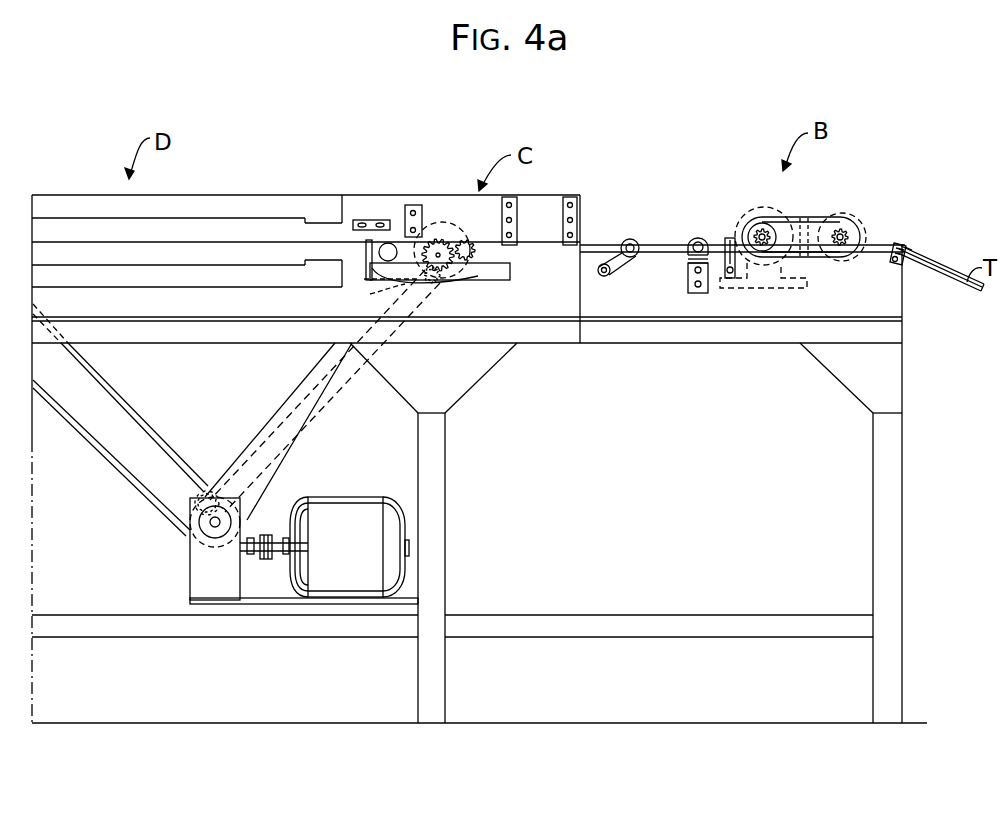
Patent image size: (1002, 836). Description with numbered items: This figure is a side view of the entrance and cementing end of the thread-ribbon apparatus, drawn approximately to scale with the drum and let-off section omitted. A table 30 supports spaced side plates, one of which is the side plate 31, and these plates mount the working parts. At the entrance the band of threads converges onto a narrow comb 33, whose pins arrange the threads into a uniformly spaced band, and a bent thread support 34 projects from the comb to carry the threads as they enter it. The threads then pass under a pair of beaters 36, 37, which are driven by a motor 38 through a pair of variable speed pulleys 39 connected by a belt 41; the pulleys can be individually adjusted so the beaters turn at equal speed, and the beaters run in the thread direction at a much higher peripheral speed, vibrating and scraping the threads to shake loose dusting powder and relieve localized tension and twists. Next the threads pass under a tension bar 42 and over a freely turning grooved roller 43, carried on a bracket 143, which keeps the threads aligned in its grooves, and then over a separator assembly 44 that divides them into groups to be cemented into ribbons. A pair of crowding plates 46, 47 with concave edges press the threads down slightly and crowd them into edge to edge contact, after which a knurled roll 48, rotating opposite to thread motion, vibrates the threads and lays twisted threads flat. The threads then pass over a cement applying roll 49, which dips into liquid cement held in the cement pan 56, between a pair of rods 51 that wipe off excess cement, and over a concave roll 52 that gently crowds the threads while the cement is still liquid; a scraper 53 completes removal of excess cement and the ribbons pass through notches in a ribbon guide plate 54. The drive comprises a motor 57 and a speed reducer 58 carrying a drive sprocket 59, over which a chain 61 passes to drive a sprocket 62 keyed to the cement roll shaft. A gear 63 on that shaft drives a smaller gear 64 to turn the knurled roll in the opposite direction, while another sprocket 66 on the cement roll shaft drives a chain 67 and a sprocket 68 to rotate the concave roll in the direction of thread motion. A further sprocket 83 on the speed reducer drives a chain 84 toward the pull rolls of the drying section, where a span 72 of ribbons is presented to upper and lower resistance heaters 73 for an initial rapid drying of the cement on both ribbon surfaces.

The table 30 is at (903, 330).
The side plate 31 is at (864, 304).
The narrow comb 33 is at (903, 242).
The bent thread support 34 is at (948, 281).
The beater 36 is at (851, 234).
The beater 37 is at (766, 230).
The motor 38 is at (761, 207).
The variable speed pulleys 39 is at (757, 228).
The belt 41 is at (809, 218).
The tension bar 42 is at (730, 238).
The grooved roller 43 is at (696, 245).
The bracket 143 is at (691, 286).
The separator assembly 44 is at (636, 240).
The crowding plate 46 is at (563, 232).
The crowding plate 47 is at (517, 234).
The knurled roll 48 is at (474, 252).
The cement applying roll 49 is at (444, 246).
The rods 51 is at (412, 237).
The concave roll 52 is at (392, 243).
The scraper 53 is at (369, 216).
The ribbon guide plate 54 is at (364, 250).
The cement pan 56 is at (478, 276).
The motor 57 is at (358, 505).
The speed reducer 58 is at (195, 574).
The drive sprocket 59 is at (258, 500).
The chain 61 is at (285, 400).
The sprocket 62 is at (438, 284).
The gear 63 is at (437, 222).
The smaller gear 64 is at (511, 273).
The sprocket 66 is at (430, 290).
The chain 67 is at (364, 279).
The sprocket 68 is at (370, 294).
The span of ribbons 72 is at (165, 248).
The resistance heaters 73 is at (179, 206).
The sprocket 83 is at (198, 497).
The chain 84 is at (126, 405).